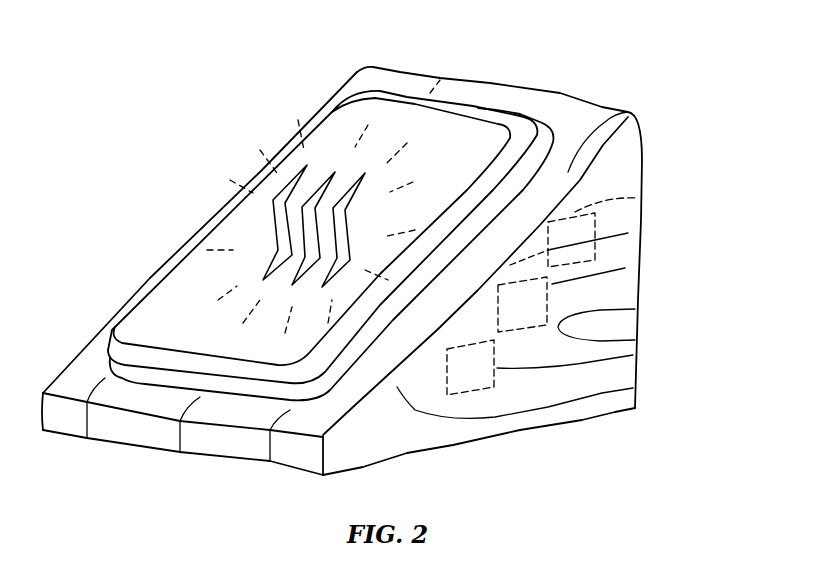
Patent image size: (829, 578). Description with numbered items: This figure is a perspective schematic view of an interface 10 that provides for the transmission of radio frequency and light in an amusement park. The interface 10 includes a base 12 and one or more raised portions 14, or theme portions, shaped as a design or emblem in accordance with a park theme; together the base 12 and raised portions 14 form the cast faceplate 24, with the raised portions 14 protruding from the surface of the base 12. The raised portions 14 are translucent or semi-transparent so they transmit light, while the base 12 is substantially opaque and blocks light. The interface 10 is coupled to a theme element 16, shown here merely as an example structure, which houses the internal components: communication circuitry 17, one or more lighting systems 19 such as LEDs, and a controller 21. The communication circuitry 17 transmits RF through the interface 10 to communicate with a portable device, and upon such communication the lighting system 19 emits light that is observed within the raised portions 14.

The interface 10 is at (476, 56).
The base 12 is at (458, 118).
The raised portions 14 is at (321, 185).
The theme element 16 is at (620, 292).
The communication circuitry 17 is at (522, 329).
The lighting system 19 is at (470, 394).
The controller 21 is at (642, 207).
The faceplate 24 is at (113, 315).